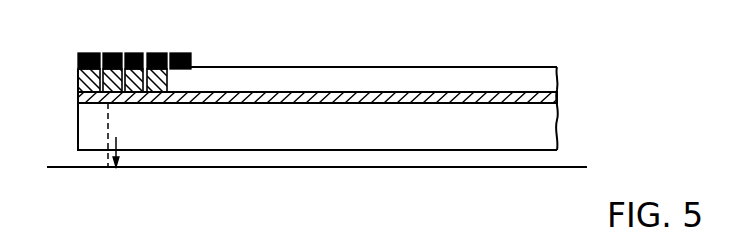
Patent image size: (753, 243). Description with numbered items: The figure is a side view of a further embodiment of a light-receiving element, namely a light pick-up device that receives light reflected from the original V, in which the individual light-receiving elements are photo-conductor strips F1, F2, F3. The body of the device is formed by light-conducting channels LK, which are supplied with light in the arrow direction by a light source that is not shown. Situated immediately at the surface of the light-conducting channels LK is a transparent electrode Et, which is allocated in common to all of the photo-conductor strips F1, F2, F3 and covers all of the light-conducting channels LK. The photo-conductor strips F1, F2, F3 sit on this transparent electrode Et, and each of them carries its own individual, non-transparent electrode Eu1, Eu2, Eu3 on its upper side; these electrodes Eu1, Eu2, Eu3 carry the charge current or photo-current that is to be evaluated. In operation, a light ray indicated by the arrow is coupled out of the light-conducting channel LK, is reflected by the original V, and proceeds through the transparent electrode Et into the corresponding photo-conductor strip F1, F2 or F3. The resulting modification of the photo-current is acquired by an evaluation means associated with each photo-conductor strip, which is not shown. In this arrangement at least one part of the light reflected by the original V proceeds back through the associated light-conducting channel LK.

The individual non-transparent electrode Eu1 is at (79, 57).
The individual non-transparent electrode Eu2 is at (102, 53).
The individual non-transparent electrode Eu3 is at (143, 53).
The photo-conductor strip F1 is at (79, 86).
The photo-conductor strip F2 is at (113, 52).
The photo-conductor strip F3 is at (133, 52).
The transparent electrode Et is at (79, 97).
The light-conducting channel LK is at (545, 128).
The original V is at (320, 168).